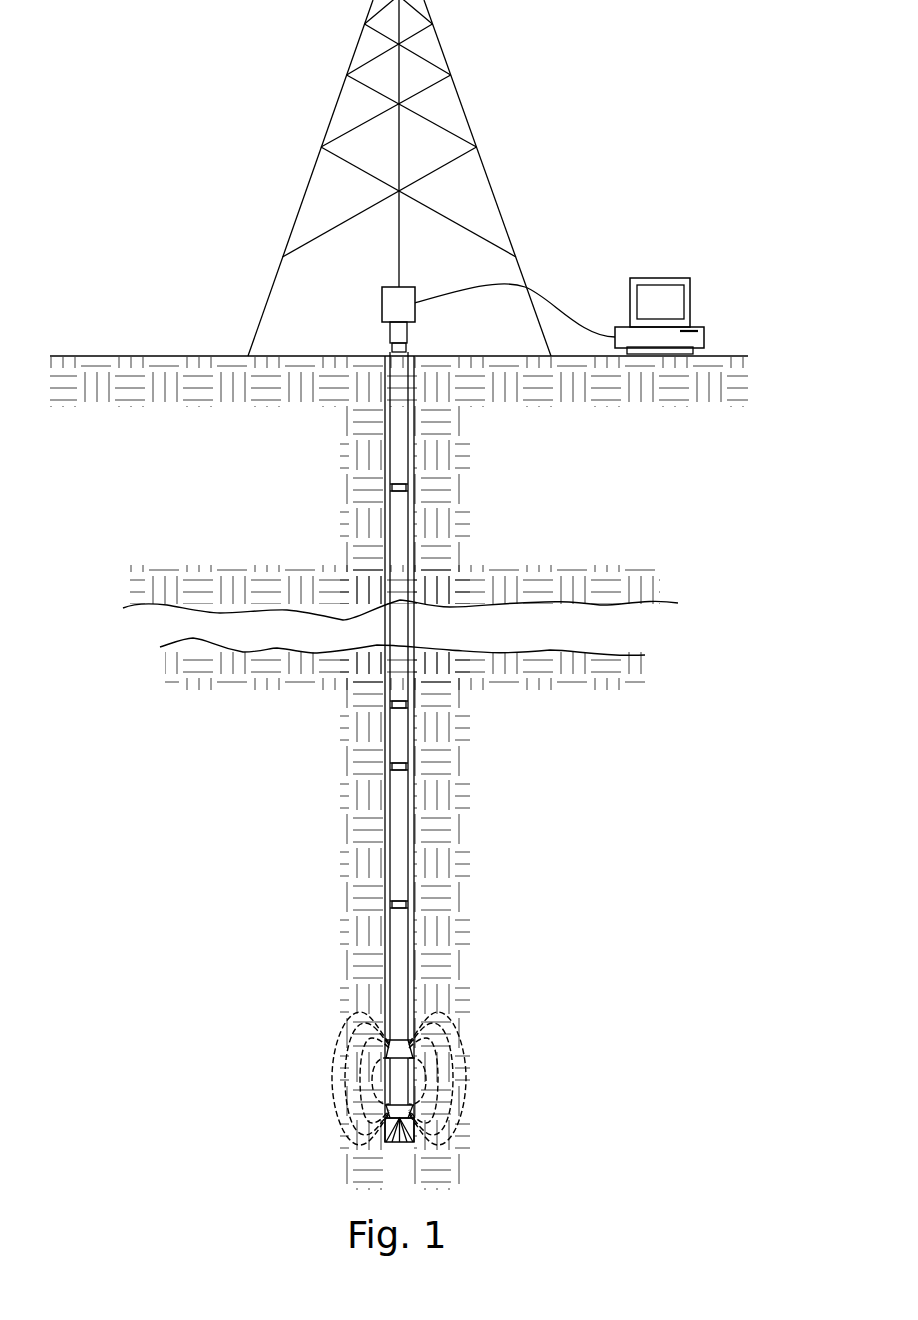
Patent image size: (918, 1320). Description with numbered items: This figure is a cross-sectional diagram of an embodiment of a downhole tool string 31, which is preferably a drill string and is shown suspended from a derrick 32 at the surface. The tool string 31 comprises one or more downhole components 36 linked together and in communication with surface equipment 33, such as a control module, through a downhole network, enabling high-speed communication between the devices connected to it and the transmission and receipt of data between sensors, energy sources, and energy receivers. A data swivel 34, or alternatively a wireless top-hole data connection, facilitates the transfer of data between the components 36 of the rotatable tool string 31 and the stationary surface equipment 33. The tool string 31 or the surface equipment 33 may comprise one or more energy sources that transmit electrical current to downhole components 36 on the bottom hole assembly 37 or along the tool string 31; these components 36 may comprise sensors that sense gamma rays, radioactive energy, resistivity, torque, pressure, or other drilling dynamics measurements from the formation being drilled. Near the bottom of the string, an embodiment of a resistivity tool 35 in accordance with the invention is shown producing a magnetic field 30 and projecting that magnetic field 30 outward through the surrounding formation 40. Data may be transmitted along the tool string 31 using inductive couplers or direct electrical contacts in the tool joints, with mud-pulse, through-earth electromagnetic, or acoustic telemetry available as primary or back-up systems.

The magnetic field 30 is at (487, 1107).
The downhole tool string 31 is at (420, 345).
The derrick 32 is at (488, 175).
The surface equipment 33 is at (662, 298).
The data swivel 34 is at (398, 303).
The resistivity tool 35 is at (390, 1043).
The downhole component 36 is at (400, 732).
The bottom hole assembly 37 is at (387, 1123).
The formation 40 is at (308, 974).